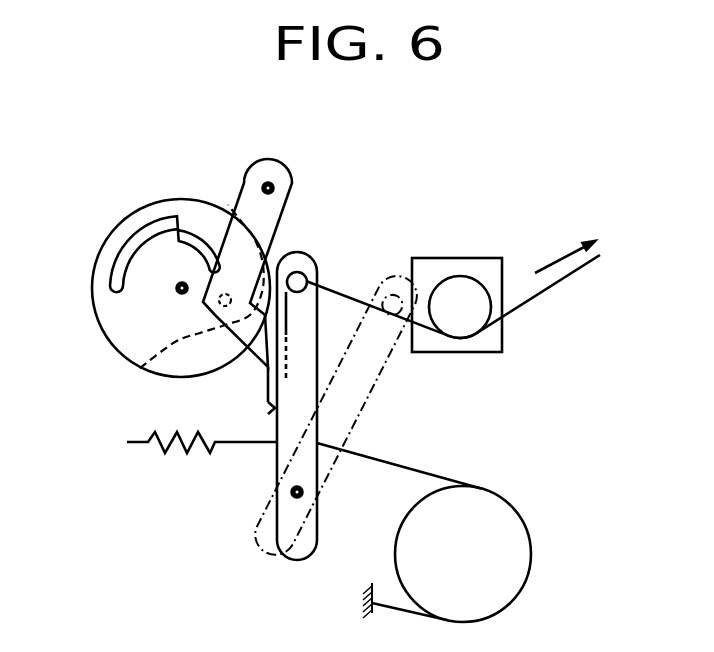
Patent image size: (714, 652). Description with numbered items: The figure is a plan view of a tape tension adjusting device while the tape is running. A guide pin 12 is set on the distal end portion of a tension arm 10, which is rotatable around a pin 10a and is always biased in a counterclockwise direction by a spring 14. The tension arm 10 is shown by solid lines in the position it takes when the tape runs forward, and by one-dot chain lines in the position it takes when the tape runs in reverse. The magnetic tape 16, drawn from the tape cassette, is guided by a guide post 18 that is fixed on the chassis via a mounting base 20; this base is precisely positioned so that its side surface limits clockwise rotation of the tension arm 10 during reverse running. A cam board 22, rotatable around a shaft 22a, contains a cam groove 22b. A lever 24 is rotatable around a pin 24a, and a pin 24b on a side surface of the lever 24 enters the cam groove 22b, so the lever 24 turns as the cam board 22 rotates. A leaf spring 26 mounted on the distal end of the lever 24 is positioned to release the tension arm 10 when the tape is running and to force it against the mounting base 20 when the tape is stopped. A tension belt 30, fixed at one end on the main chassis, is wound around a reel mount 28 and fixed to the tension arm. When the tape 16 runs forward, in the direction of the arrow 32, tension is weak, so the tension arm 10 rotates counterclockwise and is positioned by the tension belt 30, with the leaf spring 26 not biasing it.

The tension arm 10 is at (312, 258).
The pin 10a is at (293, 490).
The guide pin 12 is at (293, 265).
The spring 14 is at (153, 452).
The magnetic tape 16 is at (578, 277).
The guide post 18 is at (465, 288).
The mounting base 20 is at (490, 345).
The cam board 22 is at (167, 210).
The shaft 22a is at (178, 291).
The cam groove 22b is at (123, 250).
The lever 24 is at (253, 173).
The pin 24a is at (272, 183).
The pin 24b is at (142, 370).
The leaf spring 26 is at (265, 397).
The reel mount 28 is at (518, 557).
The tension belt 30 is at (382, 467).
The arrow 32 is at (553, 258).